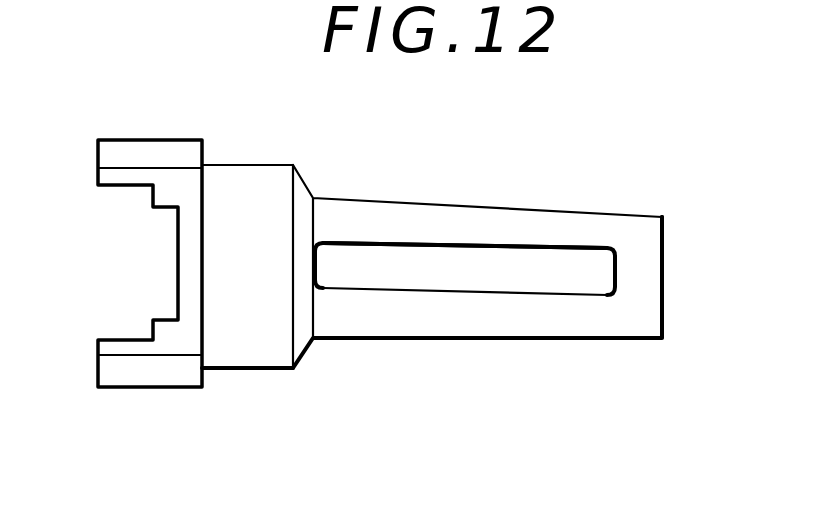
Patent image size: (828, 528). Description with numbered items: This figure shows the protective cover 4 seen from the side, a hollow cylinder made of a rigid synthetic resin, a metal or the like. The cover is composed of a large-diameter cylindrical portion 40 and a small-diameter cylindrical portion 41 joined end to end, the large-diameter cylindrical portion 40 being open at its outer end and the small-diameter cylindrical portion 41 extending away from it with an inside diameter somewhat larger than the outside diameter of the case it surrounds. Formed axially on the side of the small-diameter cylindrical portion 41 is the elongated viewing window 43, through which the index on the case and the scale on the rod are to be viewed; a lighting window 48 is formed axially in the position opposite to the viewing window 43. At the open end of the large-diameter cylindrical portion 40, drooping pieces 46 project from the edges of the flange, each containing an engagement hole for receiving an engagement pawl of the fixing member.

The protective cover 4 is at (491, 353).
The large-diameter cylindrical portion 40 is at (257, 353).
The small-diameter cylindrical portion 41 is at (643, 338).
The viewing window 43 is at (581, 297).
The drooping piece 46 is at (128, 155).
The lighting window 48 is at (465, 245).